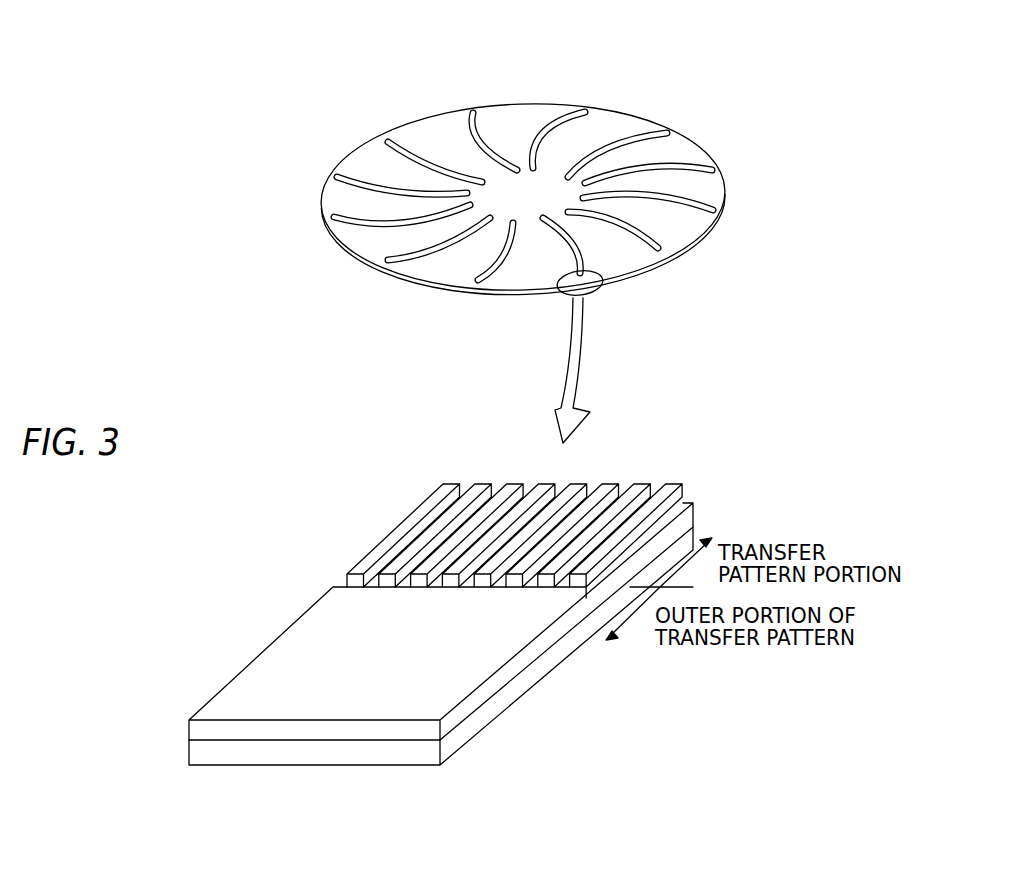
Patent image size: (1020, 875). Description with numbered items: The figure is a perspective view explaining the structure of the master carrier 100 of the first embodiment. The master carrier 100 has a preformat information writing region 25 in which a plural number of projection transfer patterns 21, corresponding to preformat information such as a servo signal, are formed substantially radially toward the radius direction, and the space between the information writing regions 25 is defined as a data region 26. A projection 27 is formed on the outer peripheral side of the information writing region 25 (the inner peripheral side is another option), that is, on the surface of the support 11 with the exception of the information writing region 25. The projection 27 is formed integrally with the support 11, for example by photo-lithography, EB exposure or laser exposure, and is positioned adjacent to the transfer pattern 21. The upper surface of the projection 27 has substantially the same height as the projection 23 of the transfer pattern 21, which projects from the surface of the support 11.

The master carrier 100 is at (483, 441).
The support 11 is at (418, 757).
The projection transfer pattern 21 is at (514, 514).
The projection of the transfer pattern 23 is at (419, 497).
The preformat information writing region 25 is at (689, 201).
The data region 26 is at (671, 177).
The projection 27 is at (308, 629).